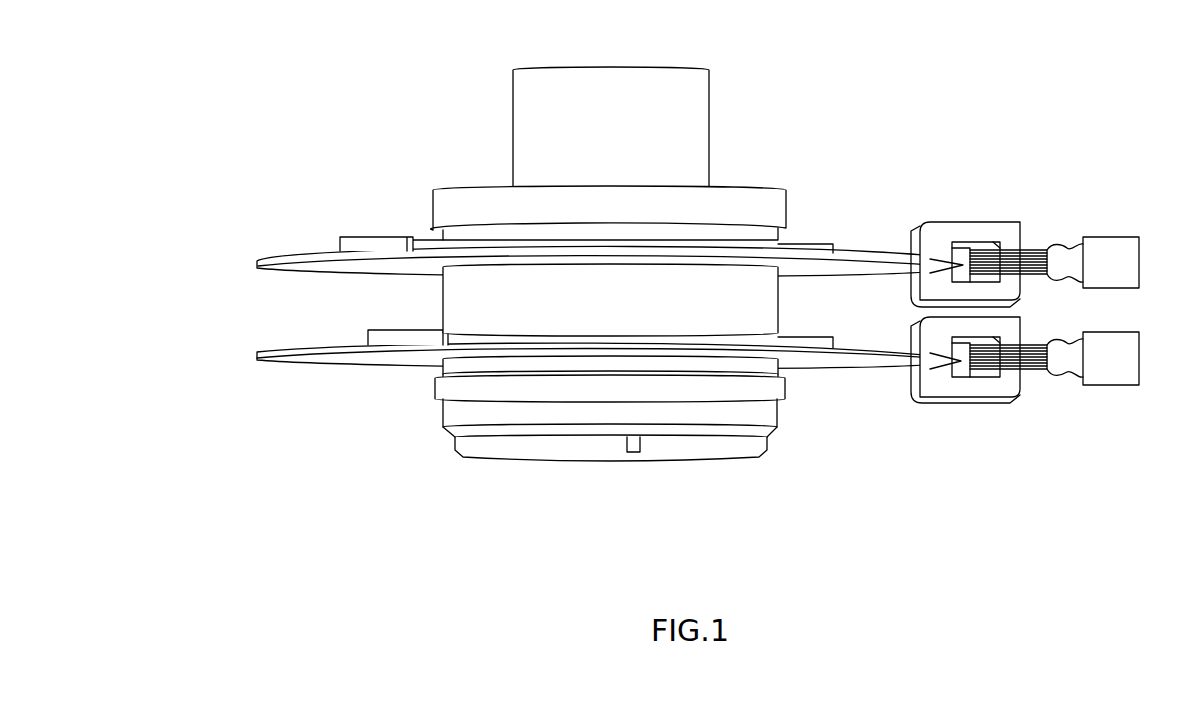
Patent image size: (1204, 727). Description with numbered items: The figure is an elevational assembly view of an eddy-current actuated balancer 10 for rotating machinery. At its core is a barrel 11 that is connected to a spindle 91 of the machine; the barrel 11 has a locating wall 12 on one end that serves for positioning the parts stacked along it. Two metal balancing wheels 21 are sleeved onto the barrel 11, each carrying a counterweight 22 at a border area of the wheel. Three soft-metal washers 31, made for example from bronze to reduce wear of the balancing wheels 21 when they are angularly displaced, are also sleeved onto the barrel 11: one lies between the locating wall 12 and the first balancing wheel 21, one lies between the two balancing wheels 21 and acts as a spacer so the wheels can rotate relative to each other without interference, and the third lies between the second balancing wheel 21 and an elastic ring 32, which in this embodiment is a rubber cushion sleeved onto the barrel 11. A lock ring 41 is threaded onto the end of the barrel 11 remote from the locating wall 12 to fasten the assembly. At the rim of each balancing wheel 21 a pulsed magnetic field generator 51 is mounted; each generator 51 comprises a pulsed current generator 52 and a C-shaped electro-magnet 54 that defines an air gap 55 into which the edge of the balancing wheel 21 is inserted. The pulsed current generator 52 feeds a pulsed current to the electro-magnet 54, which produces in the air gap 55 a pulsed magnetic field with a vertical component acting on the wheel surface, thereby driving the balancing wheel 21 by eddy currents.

The eddy-current actuated balancer 10 is at (444, 514).
The barrel 11 is at (784, 184).
The locating wall 12 is at (732, 187).
The balancing wheel 21 is at (272, 260).
The counterweight 22 is at (374, 237).
The washer 31 is at (782, 243).
The elastic ring 32 is at (435, 391).
The lock ring 41 is at (441, 416).
The pulsed magnetic field generator 51 is at (1010, 221).
The pulsed current generator 52 is at (1112, 237).
The C-shaped electro-magnet 54 is at (1021, 243).
The air gap 55 is at (939, 254).
The spindle 91 is at (709, 82).